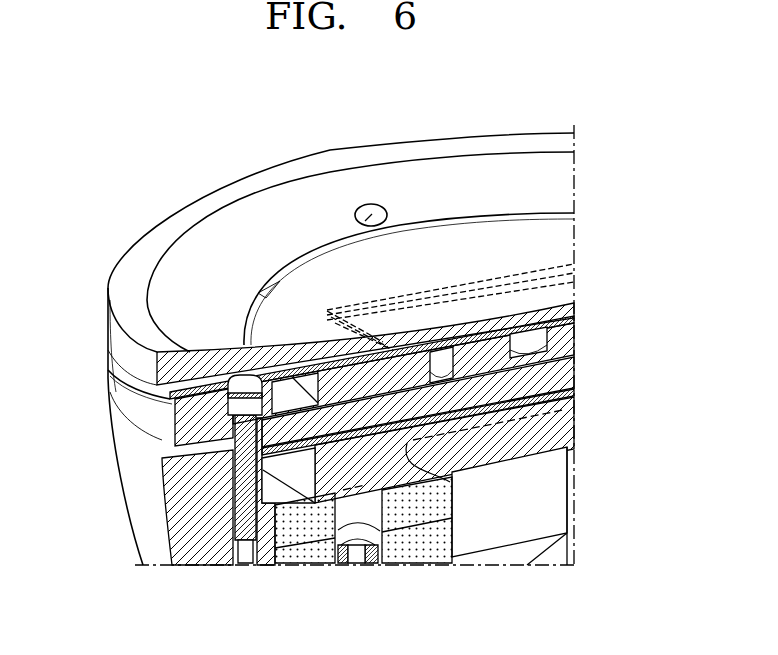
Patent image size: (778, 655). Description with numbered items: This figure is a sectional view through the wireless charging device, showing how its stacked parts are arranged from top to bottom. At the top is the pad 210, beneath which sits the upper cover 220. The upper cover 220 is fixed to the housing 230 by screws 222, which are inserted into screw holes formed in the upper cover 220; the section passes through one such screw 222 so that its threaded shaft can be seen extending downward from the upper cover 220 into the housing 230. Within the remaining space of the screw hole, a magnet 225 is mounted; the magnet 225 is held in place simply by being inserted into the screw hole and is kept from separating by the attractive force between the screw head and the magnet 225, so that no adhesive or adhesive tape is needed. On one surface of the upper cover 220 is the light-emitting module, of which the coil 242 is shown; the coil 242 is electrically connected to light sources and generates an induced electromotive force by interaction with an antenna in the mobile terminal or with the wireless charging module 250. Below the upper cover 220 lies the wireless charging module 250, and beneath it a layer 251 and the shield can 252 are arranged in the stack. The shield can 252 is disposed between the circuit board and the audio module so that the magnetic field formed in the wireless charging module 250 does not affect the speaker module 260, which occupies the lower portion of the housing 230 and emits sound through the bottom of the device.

The pad 210 is at (128, 242).
The upper cover 220 is at (114, 374).
The screw 222 is at (243, 480).
The magnet 225 is at (240, 378).
The housing 230 is at (137, 509).
The coil 242 is at (513, 268).
The wireless charging module 250 is at (573, 366).
The bonding layer 251 is at (573, 392).
The shield can 252 is at (571, 432).
The speaker module 260 is at (401, 568).